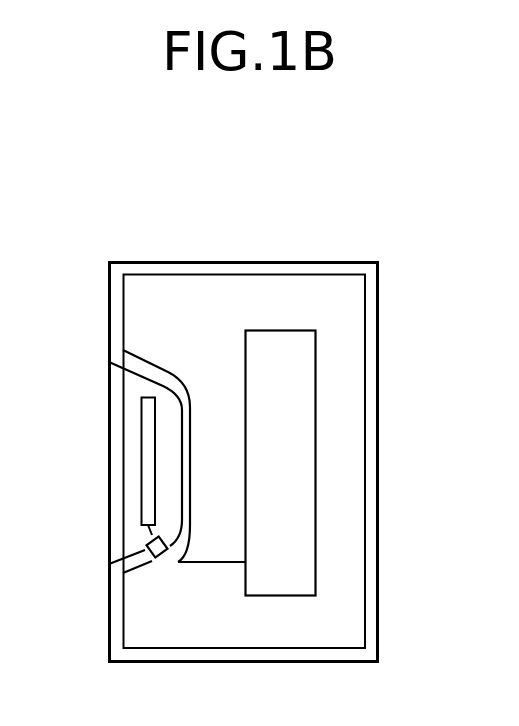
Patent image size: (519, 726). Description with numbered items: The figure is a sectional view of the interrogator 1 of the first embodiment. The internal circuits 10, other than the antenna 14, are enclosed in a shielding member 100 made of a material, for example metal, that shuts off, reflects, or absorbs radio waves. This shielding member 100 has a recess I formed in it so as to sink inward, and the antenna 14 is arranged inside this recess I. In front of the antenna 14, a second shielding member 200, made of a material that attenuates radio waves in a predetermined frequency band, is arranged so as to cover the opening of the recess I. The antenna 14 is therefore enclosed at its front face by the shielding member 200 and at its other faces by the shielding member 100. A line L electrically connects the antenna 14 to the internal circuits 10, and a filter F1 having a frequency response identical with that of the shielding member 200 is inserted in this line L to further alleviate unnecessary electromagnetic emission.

The interrogator 1 is at (374, 217).
The shielding member 100 is at (381, 615).
The shielding member 200 is at (116, 417).
The antenna 14 is at (149, 397).
The internal circuits 10 is at (274, 576).
The line L is at (215, 562).
The recess I is at (131, 490).
The filter F1 is at (151, 558).